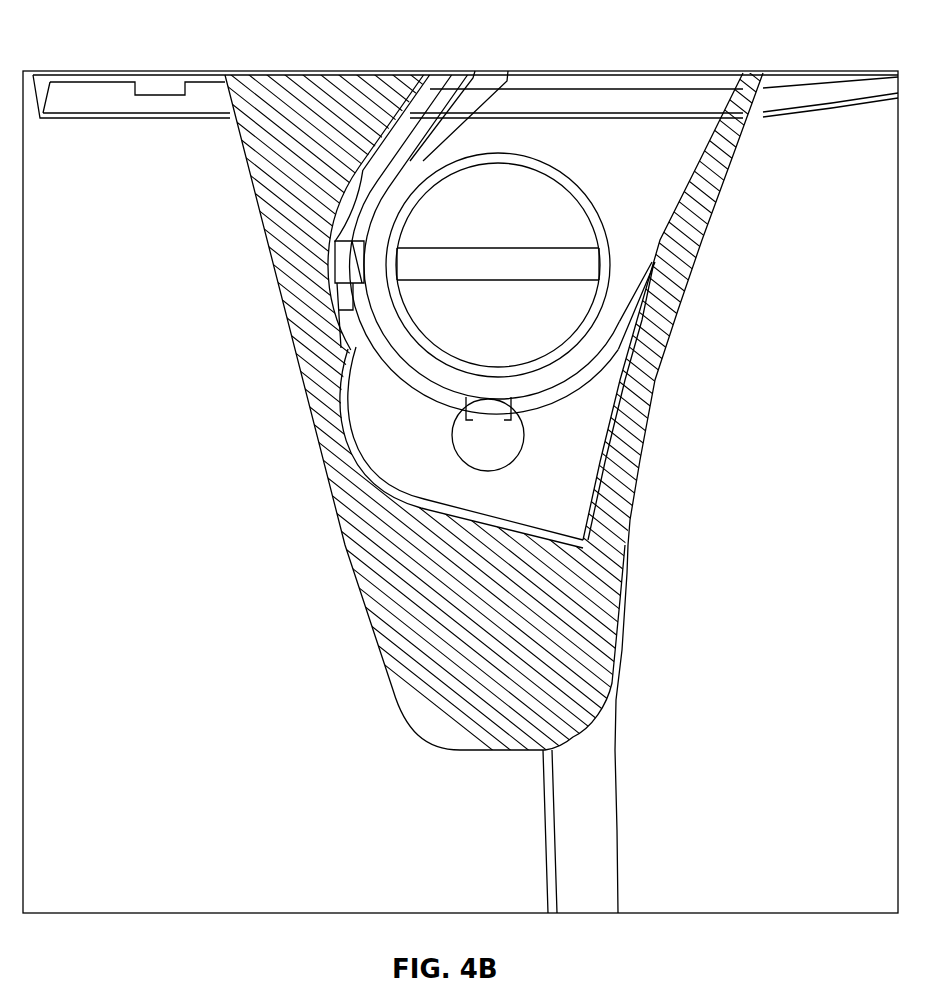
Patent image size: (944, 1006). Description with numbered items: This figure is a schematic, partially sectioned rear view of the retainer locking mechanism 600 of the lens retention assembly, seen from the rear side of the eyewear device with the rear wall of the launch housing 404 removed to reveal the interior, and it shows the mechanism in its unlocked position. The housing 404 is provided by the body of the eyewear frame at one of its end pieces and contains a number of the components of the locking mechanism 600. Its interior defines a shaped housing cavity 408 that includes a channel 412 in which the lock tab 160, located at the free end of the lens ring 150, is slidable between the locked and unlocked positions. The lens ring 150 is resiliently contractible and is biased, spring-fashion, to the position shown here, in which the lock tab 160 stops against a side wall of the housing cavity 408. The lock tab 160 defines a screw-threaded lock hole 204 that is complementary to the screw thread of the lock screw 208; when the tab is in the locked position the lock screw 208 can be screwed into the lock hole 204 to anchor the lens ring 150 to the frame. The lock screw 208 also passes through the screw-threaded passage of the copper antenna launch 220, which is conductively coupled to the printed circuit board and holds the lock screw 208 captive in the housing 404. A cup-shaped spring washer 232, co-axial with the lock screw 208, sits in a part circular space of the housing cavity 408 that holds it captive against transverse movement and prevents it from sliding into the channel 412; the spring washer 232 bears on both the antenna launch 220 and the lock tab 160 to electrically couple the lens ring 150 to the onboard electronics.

The locking mechanism 600 is at (712, 42).
The lock screw 208 is at (540, 185).
The spring washer 232 is at (345, 312).
The housing cavity 408 is at (345, 437).
The lock hole 204 is at (507, 461).
The antenna launch 220 is at (652, 208).
The channel 412 is at (607, 457).
The lock tab 160 is at (622, 549).
The launch housing 404 is at (593, 610).
The lens ring 150 is at (618, 828).